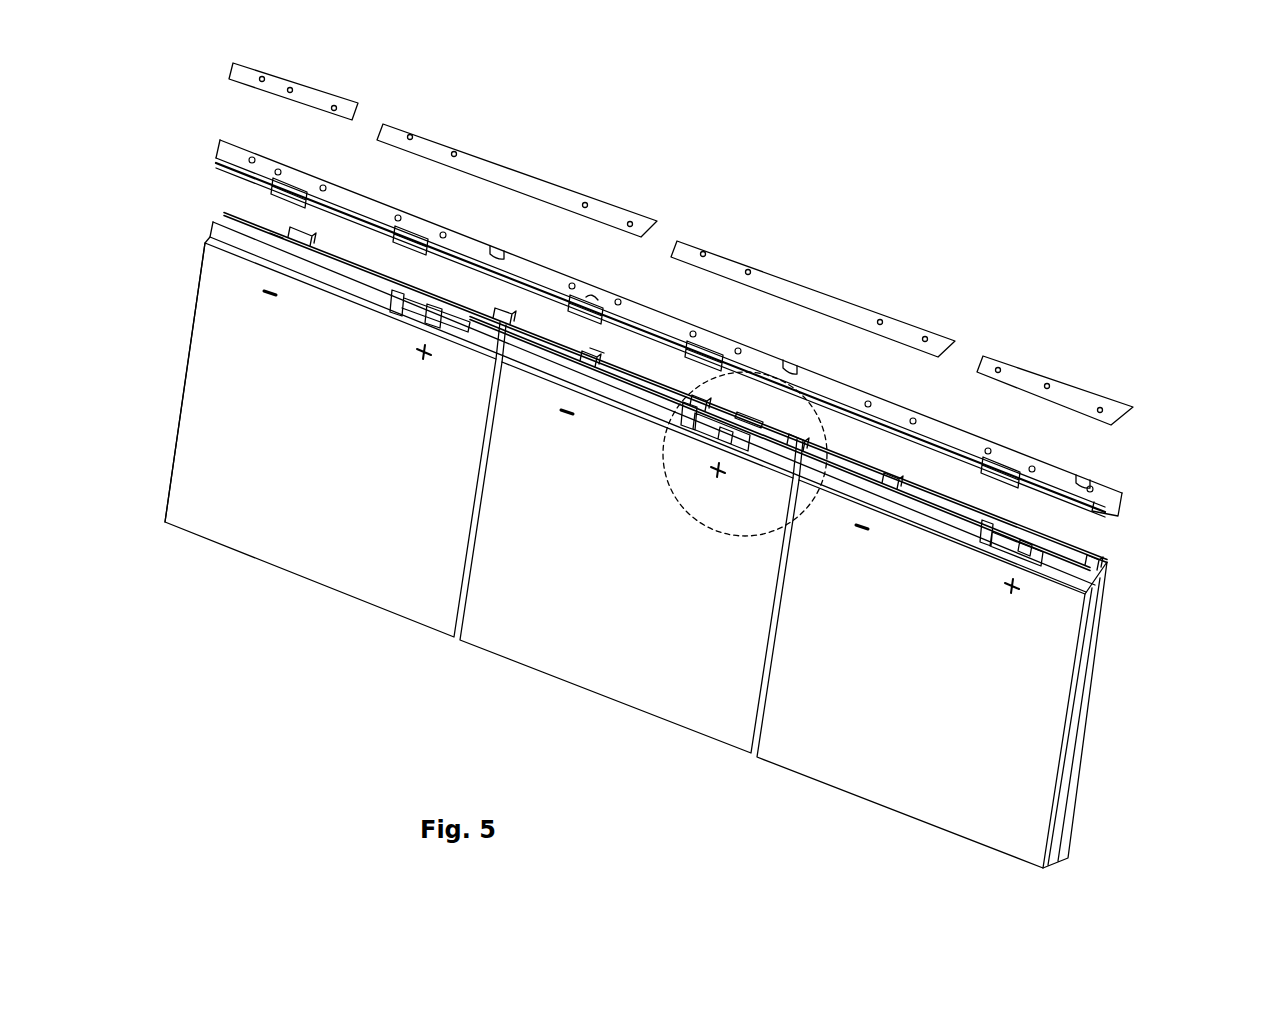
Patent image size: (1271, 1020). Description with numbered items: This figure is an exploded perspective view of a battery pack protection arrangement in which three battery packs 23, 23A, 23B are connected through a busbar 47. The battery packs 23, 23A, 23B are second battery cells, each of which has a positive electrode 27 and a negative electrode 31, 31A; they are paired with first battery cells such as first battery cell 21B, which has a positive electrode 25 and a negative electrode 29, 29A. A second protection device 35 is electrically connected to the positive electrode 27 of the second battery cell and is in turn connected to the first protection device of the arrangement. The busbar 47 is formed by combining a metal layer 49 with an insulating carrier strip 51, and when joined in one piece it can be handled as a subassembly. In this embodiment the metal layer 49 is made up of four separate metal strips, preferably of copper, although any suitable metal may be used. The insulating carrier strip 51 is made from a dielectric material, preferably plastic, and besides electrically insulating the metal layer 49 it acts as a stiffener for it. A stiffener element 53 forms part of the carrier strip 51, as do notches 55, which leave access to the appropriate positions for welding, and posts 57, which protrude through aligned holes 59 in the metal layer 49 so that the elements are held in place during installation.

The first battery cell 21B is at (1070, 837).
The second battery cell 23 is at (326, 556).
The second battery cell 23A is at (537, 636).
The second battery cell 23B is at (843, 772).
The positive electrode 25 is at (505, 312).
The positive electrode 27 is at (445, 320).
The negative electrode 29 is at (290, 230).
The negative electrode 29A is at (600, 350).
The negative electrode 31 is at (268, 238).
The negative electrode 31A is at (598, 348).
The second protection device 35 is at (413, 313).
The busbar 47 is at (1183, 408).
The metal layer 49 is at (325, 94).
The insulating carrier strip 51 is at (848, 397).
The stiffener element 53 is at (407, 240).
The notches 55 is at (592, 297).
The posts 57 is at (738, 348).
The holes 59 is at (880, 319).